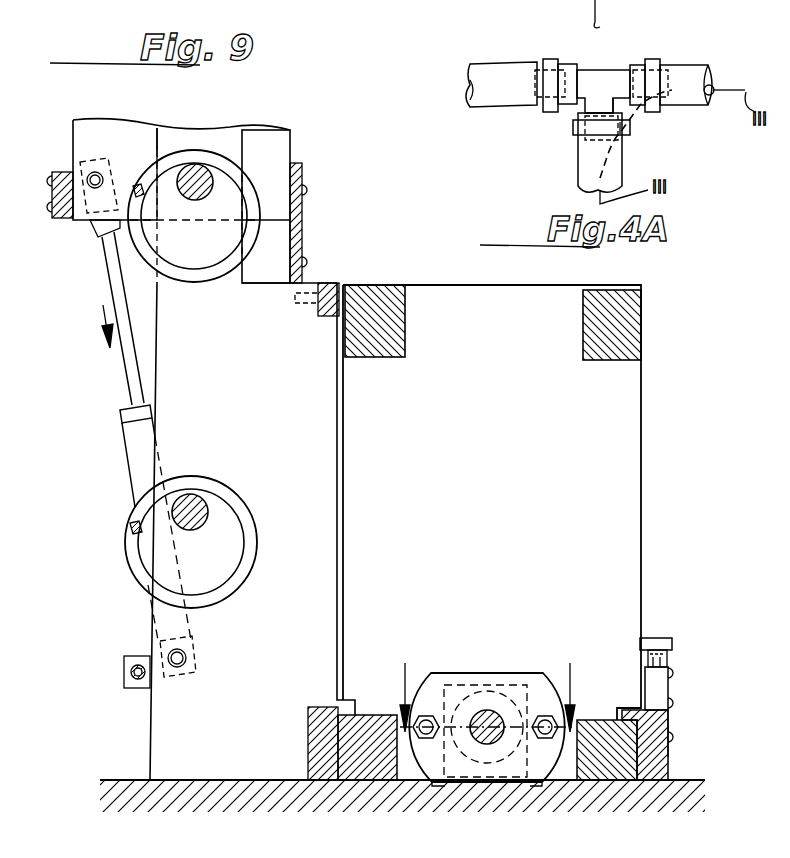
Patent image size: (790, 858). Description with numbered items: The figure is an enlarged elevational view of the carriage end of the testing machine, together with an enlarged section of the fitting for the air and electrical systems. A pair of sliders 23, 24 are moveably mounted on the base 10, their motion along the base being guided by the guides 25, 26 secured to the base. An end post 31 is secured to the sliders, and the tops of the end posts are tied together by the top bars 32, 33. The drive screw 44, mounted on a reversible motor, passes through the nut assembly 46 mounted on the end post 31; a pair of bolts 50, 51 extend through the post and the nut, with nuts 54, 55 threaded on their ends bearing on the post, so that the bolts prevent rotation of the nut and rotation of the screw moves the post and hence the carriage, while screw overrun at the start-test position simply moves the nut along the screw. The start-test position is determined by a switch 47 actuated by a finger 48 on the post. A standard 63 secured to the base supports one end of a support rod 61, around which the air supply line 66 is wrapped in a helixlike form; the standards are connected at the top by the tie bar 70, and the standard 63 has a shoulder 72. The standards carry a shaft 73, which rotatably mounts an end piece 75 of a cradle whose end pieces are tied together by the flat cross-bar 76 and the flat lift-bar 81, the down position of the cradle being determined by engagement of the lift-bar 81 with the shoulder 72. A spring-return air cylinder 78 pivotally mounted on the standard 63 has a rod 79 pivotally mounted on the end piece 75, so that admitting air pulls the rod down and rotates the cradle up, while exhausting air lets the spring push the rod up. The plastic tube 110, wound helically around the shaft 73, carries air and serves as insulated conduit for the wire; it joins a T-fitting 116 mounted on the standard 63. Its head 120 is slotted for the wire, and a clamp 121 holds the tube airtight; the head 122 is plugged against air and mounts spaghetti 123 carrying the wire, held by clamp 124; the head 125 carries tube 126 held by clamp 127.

In FIG. 9, the base 10 is at (138, 788).
In FIG. 9, the slider 23 is at (372, 730).
In FIG. 9, the slider 24 is at (598, 725).
In FIG. 9, the guide 25 is at (318, 722).
In FIG. 9, the guide 26 is at (652, 748).
In FIG. 9, the end post 31 is at (613, 480).
In FIG. 9, the top bar 32 is at (372, 312).
In FIG. 9, the top bar 33 is at (625, 335).
In FIG. 9, the drive screw 44 is at (487, 708).
In FIG. 9, the nut assembly 46 is at (455, 677).
In FIG. 9, the switch 47 is at (660, 682).
In FIG. 9, the finger 48 is at (655, 640).
In FIG. 9, the bolt 50 is at (426, 714).
In FIG. 9, the bolt 51 is at (550, 714).
In FIG. 9, the nut 54 is at (422, 760).
In FIG. 9, the nut 55 is at (548, 760).
In FIG. 9, the support rod 61 is at (198, 508).
In FIG. 9, the standard 63 is at (262, 395).
In FIG. 9, the air supply line 66 is at (138, 564).
In FIG. 9, the tie bar 70 is at (328, 314).
In FIG. 9, the shoulder 72 is at (272, 272).
In FIG. 9, the shaft 73 is at (197, 176).
In FIG. 9, the end piece 75 is at (82, 143).
In FIG. 9, the flat cross-bar 76 is at (58, 190).
In FIG. 9, the air cylinder 78 is at (135, 442).
In FIG. 9, the rod 79 is at (127, 367).
In FIG. 9, the lift-bar 81 is at (304, 222).
In FIG. 9, the plastic tube 110 is at (180, 158).
In FIG. 4A, the plastic tube 110 is at (693, 70).
In FIG. 4A, the T-fitting 116 is at (598, 80).
In FIG. 4A, the head 120 is at (622, 85).
In FIG. 4A, the clamp 121 is at (658, 62).
In FIG. 4A, the head 122 is at (600, 107).
In FIG. 4A, the spaghetti 123 is at (583, 163).
In FIG. 4A, the clamp 124 is at (632, 128).
In FIG. 4A, the head 125 is at (580, 72).
In FIG. 4A, the tube 126 is at (492, 65).
In FIG. 4A, the clamp 127 is at (548, 60).